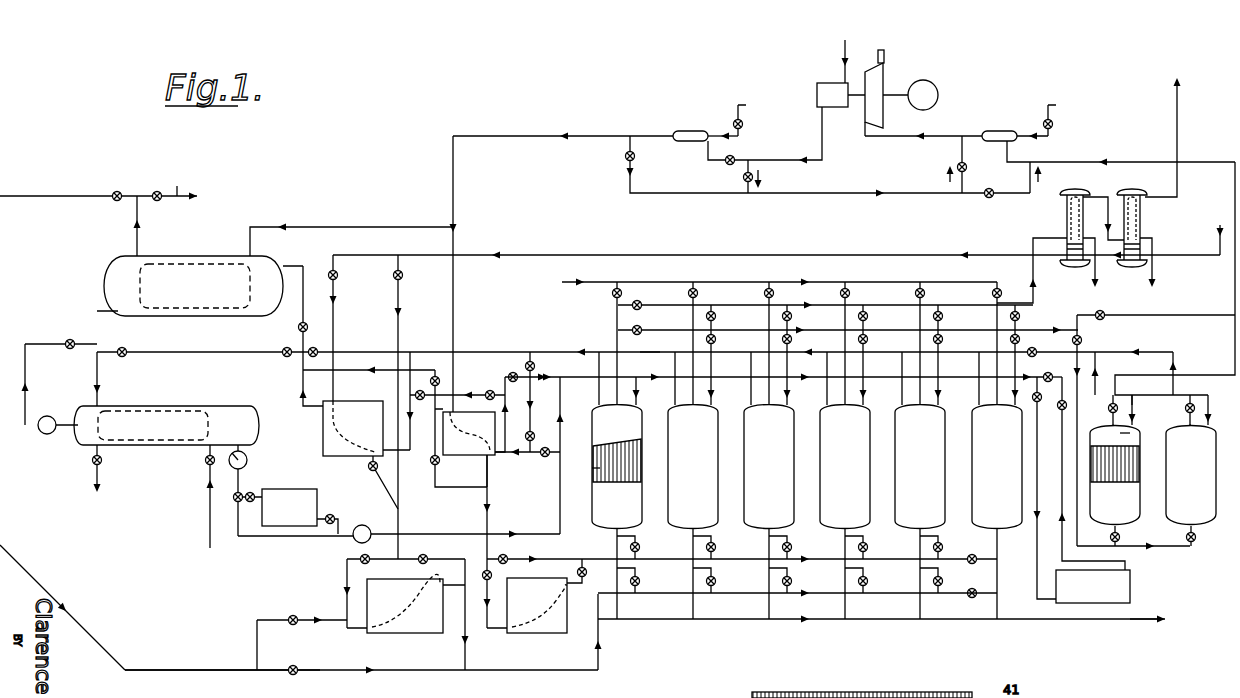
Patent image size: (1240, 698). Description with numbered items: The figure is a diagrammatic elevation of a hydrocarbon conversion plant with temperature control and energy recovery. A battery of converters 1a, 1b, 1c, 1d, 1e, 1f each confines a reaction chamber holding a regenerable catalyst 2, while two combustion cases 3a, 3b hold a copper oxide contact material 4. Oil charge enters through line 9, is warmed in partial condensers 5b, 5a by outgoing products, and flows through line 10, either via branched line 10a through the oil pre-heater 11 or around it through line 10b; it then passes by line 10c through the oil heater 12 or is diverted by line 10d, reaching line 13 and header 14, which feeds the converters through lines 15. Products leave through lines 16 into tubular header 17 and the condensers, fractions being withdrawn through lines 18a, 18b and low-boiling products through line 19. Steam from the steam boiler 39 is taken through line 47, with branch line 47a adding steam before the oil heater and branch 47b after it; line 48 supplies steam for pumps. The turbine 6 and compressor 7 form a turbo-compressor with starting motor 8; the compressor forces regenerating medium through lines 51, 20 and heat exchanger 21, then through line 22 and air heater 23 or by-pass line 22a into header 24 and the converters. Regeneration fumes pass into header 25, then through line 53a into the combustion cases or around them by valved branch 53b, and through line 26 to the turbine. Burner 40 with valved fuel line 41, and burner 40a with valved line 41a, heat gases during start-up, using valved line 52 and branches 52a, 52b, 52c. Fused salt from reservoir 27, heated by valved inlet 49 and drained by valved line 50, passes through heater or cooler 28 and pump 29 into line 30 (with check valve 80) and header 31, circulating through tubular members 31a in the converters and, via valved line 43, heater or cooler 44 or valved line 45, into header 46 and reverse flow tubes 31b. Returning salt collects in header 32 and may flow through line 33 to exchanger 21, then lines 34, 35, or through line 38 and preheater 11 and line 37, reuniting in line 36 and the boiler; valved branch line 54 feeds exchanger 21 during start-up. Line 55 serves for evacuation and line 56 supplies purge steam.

The converter 1a is at (617, 450).
The converter 1b is at (693, 450).
The converter 1c is at (769, 450).
The converter 1d is at (845, 450).
The converter 1e is at (920, 450).
The converter 1f is at (997, 450).
The contact mass or catalyst 2 is at (642, 453).
The combustion case 3a is at (1115, 470).
The combustion case 3b is at (1191, 470).
The contact material 4 is at (1140, 472).
The partial condenser 5a is at (1067, 215).
The partial condenser 5b is at (1142, 219).
The turbine 6 is at (886, 77).
The compressor 7 is at (830, 107).
The starting motor 8 is at (926, 82).
The line 9 is at (1215, 232).
The line 10 is at (545, 255).
The branched line 10a is at (336, 319).
The line 10b is at (401, 319).
The line 10c is at (347, 562).
The line 10d is at (408, 605).
The oil pre-heater 11 is at (323, 447).
The oil heater 12 is at (414, 636).
The line 13 is at (536, 676).
The header 14 is at (751, 598).
The lines 15 is at (692, 545).
The lines 16 is at (617, 338).
The tubular header 17 is at (901, 305).
The line 18a is at (1097, 275).
The line 18b is at (1154, 275).
The line 19 is at (1178, 121).
The line 20 is at (542, 136).
The heat exchanger 21 is at (460, 455).
The line 22 is at (487, 498).
The line 22a is at (581, 559).
The air heater 23 is at (538, 633).
The header 24 is at (753, 565).
The header 25 is at (832, 332).
The line 26 is at (1235, 350).
The reservoir 27 is at (160, 448).
The heater or cooler 28 is at (309, 489).
The pump 29 is at (358, 508).
The line 30 is at (560, 512).
The header 31 is at (735, 376).
The tubular members 31a is at (593, 469).
The reverse flow tubes 31b is at (1130, 433).
The header 32 is at (641, 352).
The line 33 is at (534, 402).
The line 34 is at (499, 421).
The line 35 is at (482, 390).
The line 36 is at (286, 357).
The line 37 is at (301, 397).
The line 38 is at (412, 418).
The steam boiler 39 is at (210, 316).
The burner 40 is at (707, 131).
The burner 40a is at (1013, 131).
The valved line 41 is at (749, 119).
The valved line 41a is at (1068, 120).
The valved line 43 is at (1037, 560).
The heater or cooler 44 is at (1130, 584).
The valved line 45 is at (1062, 374).
The header 46 is at (1162, 405).
The line 47 is at (77, 195).
The branch line 47a is at (257, 632).
The branch 47b is at (321, 672).
The line 48 is at (177, 186).
The valved inlet 49 is at (208, 480).
The valved line 50 is at (100, 486).
The line 51 is at (786, 145).
The valved line 52 is at (633, 187).
The branch 52a is at (952, 160).
The branch 52b is at (1013, 189).
The branch line 52c is at (744, 176).
The line 53a is at (1081, 341).
The valved branch 53b is at (1174, 313).
The valved branch line 54 is at (545, 456).
The line 55 is at (1152, 619).
The line 56 is at (666, 282).
The check valve 80 is at (247, 461).